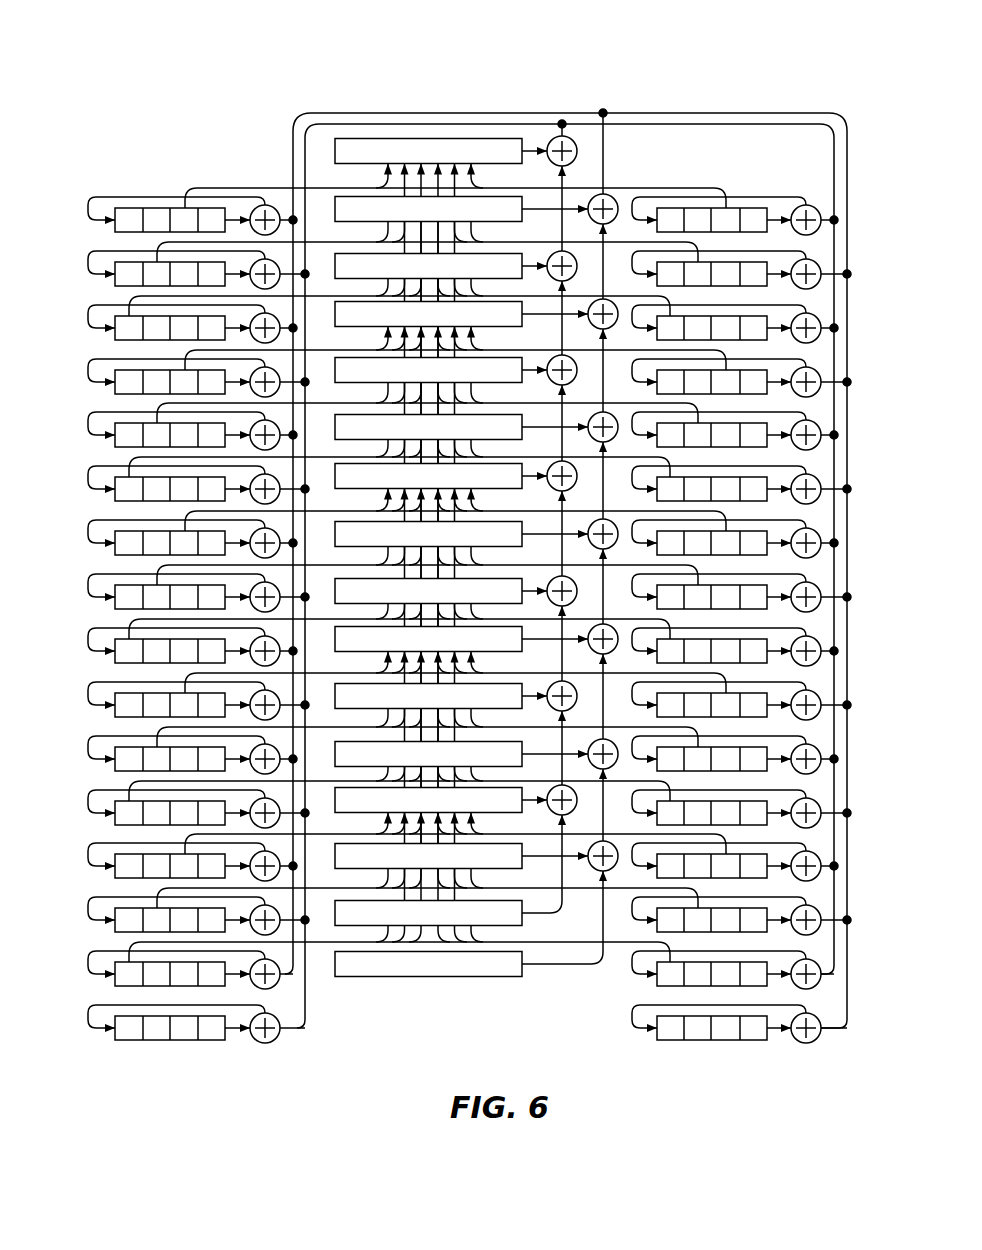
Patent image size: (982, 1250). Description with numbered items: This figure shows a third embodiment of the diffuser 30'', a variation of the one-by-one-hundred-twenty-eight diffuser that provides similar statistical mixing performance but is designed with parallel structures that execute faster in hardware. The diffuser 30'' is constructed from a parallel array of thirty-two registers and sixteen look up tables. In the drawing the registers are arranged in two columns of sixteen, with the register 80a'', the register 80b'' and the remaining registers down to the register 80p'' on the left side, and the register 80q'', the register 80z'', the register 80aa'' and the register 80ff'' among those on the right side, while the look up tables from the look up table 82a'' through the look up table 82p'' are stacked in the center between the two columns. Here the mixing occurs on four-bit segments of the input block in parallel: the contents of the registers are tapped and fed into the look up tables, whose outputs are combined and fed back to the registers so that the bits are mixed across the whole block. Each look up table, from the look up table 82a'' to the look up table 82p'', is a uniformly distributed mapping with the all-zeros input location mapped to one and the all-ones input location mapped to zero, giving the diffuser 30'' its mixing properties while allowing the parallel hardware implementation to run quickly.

The diffuser 30'' is at (468, 570).
The register 80a'' is at (140, 187).
The register 80b'' is at (127, 263).
The register 80p'' is at (165, 1073).
The register 80q'' is at (739, 141).
The register 80z'' is at (775, 665).
The register 80aa'' is at (782, 749).
The register 80ff'' is at (764, 1051).
The look up table 82a'' is at (378, 129).
The look up table 82p'' is at (428, 1007).